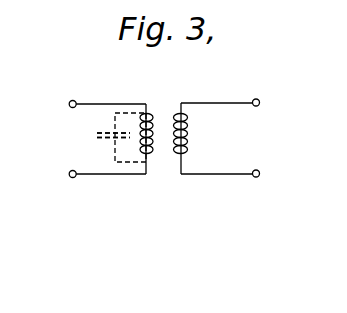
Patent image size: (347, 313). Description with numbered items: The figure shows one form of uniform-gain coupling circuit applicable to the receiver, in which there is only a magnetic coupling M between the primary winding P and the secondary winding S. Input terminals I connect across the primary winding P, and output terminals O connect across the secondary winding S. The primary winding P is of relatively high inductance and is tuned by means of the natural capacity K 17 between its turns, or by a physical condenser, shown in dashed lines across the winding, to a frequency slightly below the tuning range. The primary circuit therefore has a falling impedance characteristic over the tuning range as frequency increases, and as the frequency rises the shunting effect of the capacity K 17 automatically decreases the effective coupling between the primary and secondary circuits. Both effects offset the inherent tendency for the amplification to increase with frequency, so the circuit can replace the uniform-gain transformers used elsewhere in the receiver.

The input terminals I is at (71, 109).
The primary winding P is at (137, 139).
The capacity K is at (116, 137).
The capacity 17 is at (113, 149).
The magnetic coupling M is at (197, 95).
The secondary winding S is at (187, 138).
The output terminals O is at (256, 108).